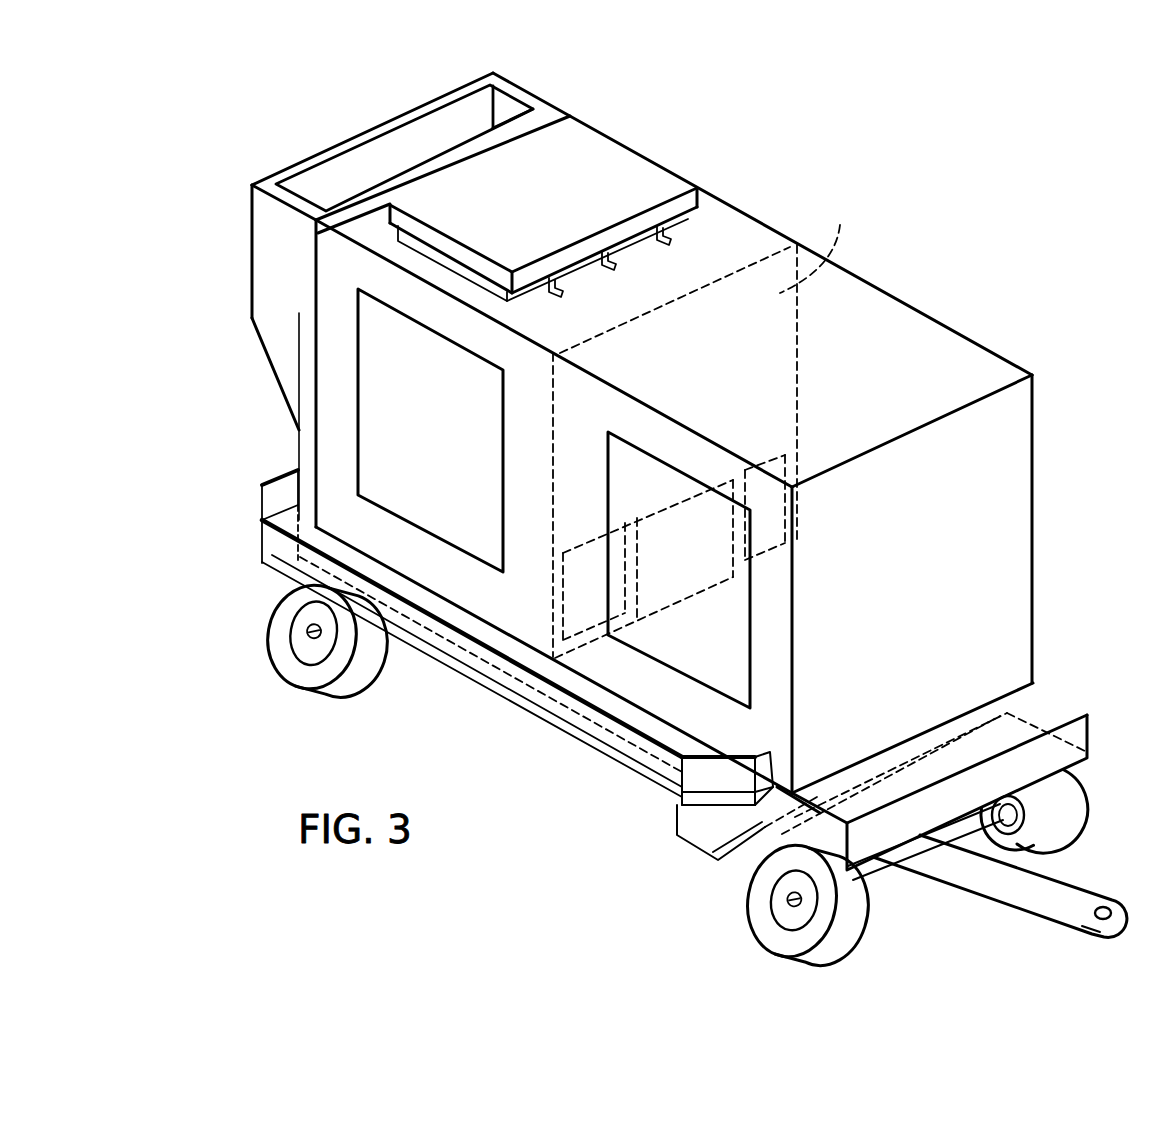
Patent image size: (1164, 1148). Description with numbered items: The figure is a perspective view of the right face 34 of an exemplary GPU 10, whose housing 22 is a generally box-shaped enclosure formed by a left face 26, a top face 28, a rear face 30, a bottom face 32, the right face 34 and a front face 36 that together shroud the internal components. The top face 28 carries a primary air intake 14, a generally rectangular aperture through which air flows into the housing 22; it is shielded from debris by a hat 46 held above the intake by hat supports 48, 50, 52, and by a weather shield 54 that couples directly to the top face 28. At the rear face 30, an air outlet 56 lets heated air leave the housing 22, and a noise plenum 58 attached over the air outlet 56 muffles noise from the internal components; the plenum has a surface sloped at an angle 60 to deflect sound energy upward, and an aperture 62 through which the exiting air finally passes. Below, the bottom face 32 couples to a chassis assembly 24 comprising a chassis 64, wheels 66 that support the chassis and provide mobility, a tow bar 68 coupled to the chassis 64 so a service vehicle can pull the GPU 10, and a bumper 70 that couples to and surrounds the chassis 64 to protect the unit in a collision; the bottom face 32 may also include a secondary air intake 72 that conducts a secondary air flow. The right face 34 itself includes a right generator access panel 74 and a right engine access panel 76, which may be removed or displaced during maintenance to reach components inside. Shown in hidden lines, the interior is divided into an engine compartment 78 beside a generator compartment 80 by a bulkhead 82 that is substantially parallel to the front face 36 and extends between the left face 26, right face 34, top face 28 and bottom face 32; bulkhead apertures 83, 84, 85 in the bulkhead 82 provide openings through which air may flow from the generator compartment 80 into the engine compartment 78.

The GPU 10 is at (240, 150).
The primary air intake 14 is at (757, 232).
The housing 22 is at (1038, 433).
The chassis assembly 24 is at (573, 719).
The left face 26 is at (1035, 490).
The top face 28 is at (903, 318).
The rear face 30 is at (298, 470).
The bottom face 32 is at (642, 778).
The right face 34 is at (333, 520).
The front face 36 is at (1018, 583).
The hat 46 is at (675, 175).
The hat support 48 is at (563, 294).
The hat support 50 is at (617, 267).
The hat support 52 is at (672, 243).
The weather shield 54 is at (450, 262).
The air outlet 56 is at (430, 155).
The noise plenum 58 is at (262, 352).
The angle 60 is at (297, 315).
The aperture 62 is at (524, 102).
The chassis 64 is at (613, 747).
The wheels 66 is at (285, 650).
The tow bar 68 is at (1017, 893).
The bumper 70 is at (260, 541).
The secondary air intake 72 is at (750, 845).
The right generator access panel 74 is at (752, 604).
The right engine access panel 76 is at (492, 492).
The engine compartment 78 is at (465, 595).
The generator compartment 80 is at (727, 747).
The bulkhead 82 is at (820, 244).
The bulkhead aperture 83 is at (594, 533).
The bulkhead aperture 84 is at (685, 498).
The bulkhead aperture 85 is at (767, 460).